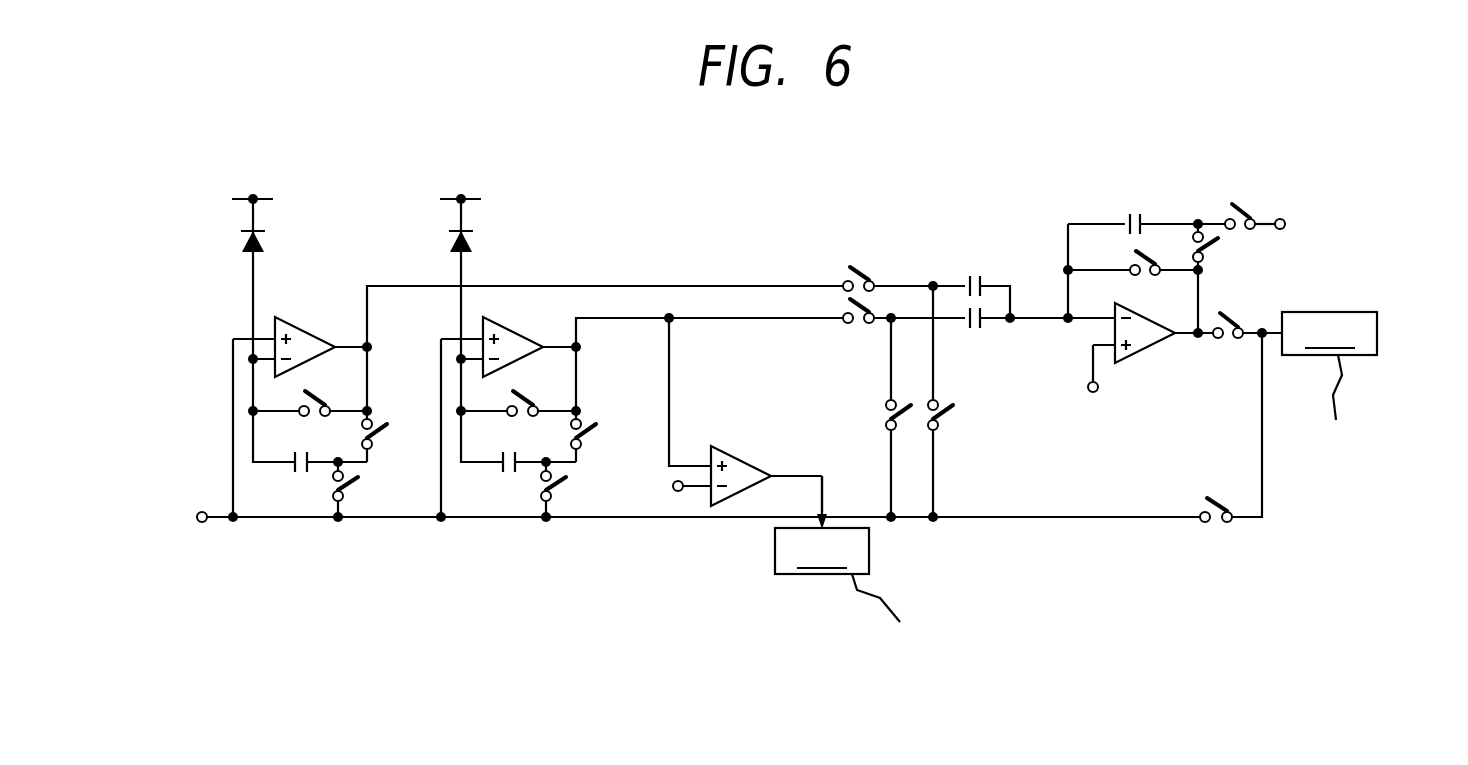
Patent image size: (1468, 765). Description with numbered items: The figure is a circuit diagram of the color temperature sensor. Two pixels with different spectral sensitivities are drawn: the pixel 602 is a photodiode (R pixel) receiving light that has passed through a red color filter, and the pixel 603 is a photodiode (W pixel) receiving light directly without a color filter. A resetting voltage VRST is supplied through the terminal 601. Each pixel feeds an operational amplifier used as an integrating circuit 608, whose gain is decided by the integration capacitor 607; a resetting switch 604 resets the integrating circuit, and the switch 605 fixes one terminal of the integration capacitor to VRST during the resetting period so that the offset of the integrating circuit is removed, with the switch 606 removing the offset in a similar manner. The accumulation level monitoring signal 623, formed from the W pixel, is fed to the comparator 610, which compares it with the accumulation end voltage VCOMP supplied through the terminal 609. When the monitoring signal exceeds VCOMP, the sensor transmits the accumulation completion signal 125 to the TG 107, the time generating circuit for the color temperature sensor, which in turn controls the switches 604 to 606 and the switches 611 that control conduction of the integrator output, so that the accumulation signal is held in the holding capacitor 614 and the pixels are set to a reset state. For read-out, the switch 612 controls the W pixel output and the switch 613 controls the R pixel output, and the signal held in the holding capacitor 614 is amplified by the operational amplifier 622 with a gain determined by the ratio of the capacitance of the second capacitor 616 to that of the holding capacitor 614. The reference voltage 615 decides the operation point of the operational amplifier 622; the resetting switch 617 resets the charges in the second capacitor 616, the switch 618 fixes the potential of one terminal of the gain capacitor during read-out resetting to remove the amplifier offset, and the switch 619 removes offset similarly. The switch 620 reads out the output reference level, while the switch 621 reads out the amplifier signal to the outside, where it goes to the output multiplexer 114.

The terminal 601 is at (197, 517).
The pixel 602 is at (243, 238).
The pixel 603 is at (451, 238).
The resetting switch 604 is at (301, 392).
The switch 605 is at (354, 502).
The switch 606 is at (384, 444).
The integration capacitor 607 is at (291, 468).
The integrating circuit 608 is at (313, 324).
The terminal 609 is at (678, 491).
The comparator 610 is at (744, 448).
The switches 611 is at (845, 308).
The switch 612 is at (514, 396).
The switch 613 is at (951, 414).
The holding capacitor 614 is at (966, 316).
The reference voltage 615 is at (1090, 393).
The second capacitor 616 is at (1138, 210).
The resetting switch 617 is at (1125, 255).
The switch 618 is at (1212, 252).
The switch 619 is at (1244, 206).
The switch 620 is at (1206, 501).
The switch 621 is at (1228, 342).
The operational amplifier 622 is at (1145, 356).
The accumulation level monitoring signal 623 is at (520, 332).
The accumulation completion signal 125 is at (821, 473).
The TG 107 is at (907, 587).
The output multiplexer 114 is at (1350, 378).